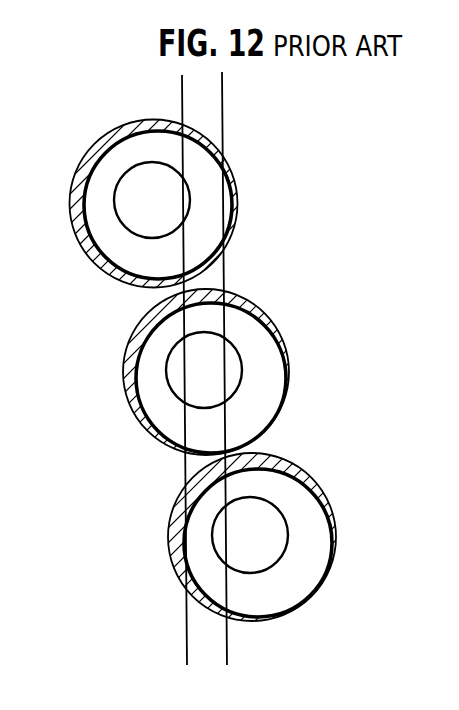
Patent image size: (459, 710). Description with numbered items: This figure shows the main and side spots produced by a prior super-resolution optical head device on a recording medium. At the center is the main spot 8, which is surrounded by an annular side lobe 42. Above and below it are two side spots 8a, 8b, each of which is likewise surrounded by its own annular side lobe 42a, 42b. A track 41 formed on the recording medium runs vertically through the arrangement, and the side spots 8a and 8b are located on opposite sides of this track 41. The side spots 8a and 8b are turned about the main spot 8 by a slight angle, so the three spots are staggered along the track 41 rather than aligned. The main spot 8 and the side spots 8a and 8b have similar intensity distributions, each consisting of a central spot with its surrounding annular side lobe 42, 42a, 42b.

The track 41 is at (203, 104).
The annular side lobe 42a is at (106, 138).
The annular side lobe 42 is at (257, 318).
The annular side lobe 42b is at (325, 536).
The side spot 8a is at (128, 186).
The main spot 8 is at (233, 370).
The side spot 8b is at (277, 527).